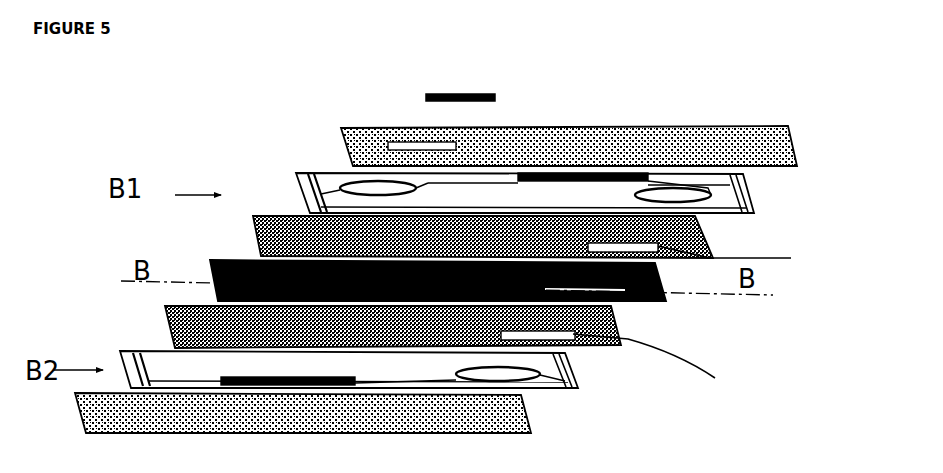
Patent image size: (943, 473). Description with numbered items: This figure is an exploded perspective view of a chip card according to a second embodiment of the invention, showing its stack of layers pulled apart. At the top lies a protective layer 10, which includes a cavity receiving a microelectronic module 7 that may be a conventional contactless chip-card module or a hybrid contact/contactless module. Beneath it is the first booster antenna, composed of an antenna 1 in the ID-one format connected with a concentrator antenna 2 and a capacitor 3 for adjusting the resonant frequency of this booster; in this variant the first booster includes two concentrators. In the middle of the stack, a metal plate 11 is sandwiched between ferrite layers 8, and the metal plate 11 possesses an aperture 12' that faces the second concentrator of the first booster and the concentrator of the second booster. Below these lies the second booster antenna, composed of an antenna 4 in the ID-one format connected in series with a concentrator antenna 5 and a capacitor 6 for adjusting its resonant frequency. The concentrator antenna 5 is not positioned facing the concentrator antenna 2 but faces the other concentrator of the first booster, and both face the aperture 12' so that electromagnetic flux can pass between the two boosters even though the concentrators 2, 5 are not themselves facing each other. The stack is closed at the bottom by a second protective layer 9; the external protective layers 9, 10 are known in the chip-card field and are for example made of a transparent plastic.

The antenna 1 is at (727, 173).
The concentrator antenna 2 is at (332, 173).
The capacitor 3 is at (592, 165).
The antenna 4 is at (132, 348).
The concentrator antenna 5 is at (560, 382).
The capacitor 6 is at (292, 378).
The microelectronic module 7 is at (475, 87).
The ferrite layer 8 is at (693, 222).
The protective layer 9 is at (507, 412).
The protective layer 10 is at (773, 127).
The metal plate 11 is at (652, 293).
The aperture 12' is at (671, 319).